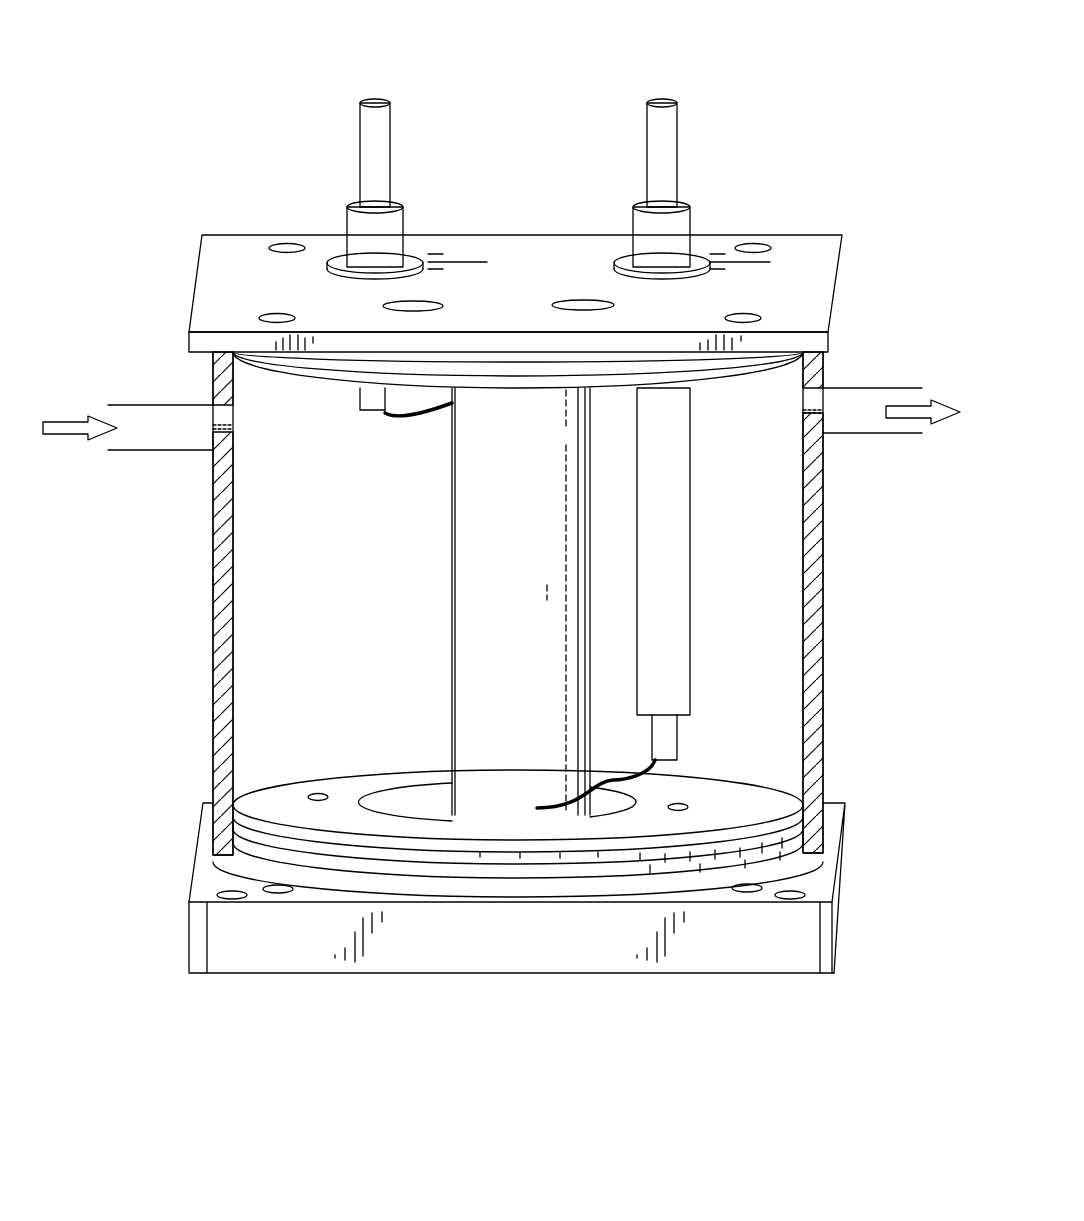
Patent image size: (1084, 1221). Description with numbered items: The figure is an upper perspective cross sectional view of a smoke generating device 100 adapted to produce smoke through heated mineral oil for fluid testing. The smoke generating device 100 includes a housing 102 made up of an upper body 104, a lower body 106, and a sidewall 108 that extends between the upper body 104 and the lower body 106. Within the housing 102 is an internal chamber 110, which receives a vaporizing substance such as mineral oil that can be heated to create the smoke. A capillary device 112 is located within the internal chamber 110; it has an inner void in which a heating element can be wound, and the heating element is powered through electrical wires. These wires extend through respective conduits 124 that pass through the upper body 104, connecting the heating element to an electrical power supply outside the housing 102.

The smoke generating device 100 is at (240, 68).
The housing 102 is at (817, 200).
The upper body 104 is at (210, 275).
The lower body 106 is at (770, 975).
The sidewall 108 is at (223, 550).
The internal chamber 110 is at (257, 732).
The capillary device 112 is at (480, 614).
The conduits 124 is at (346, 218).